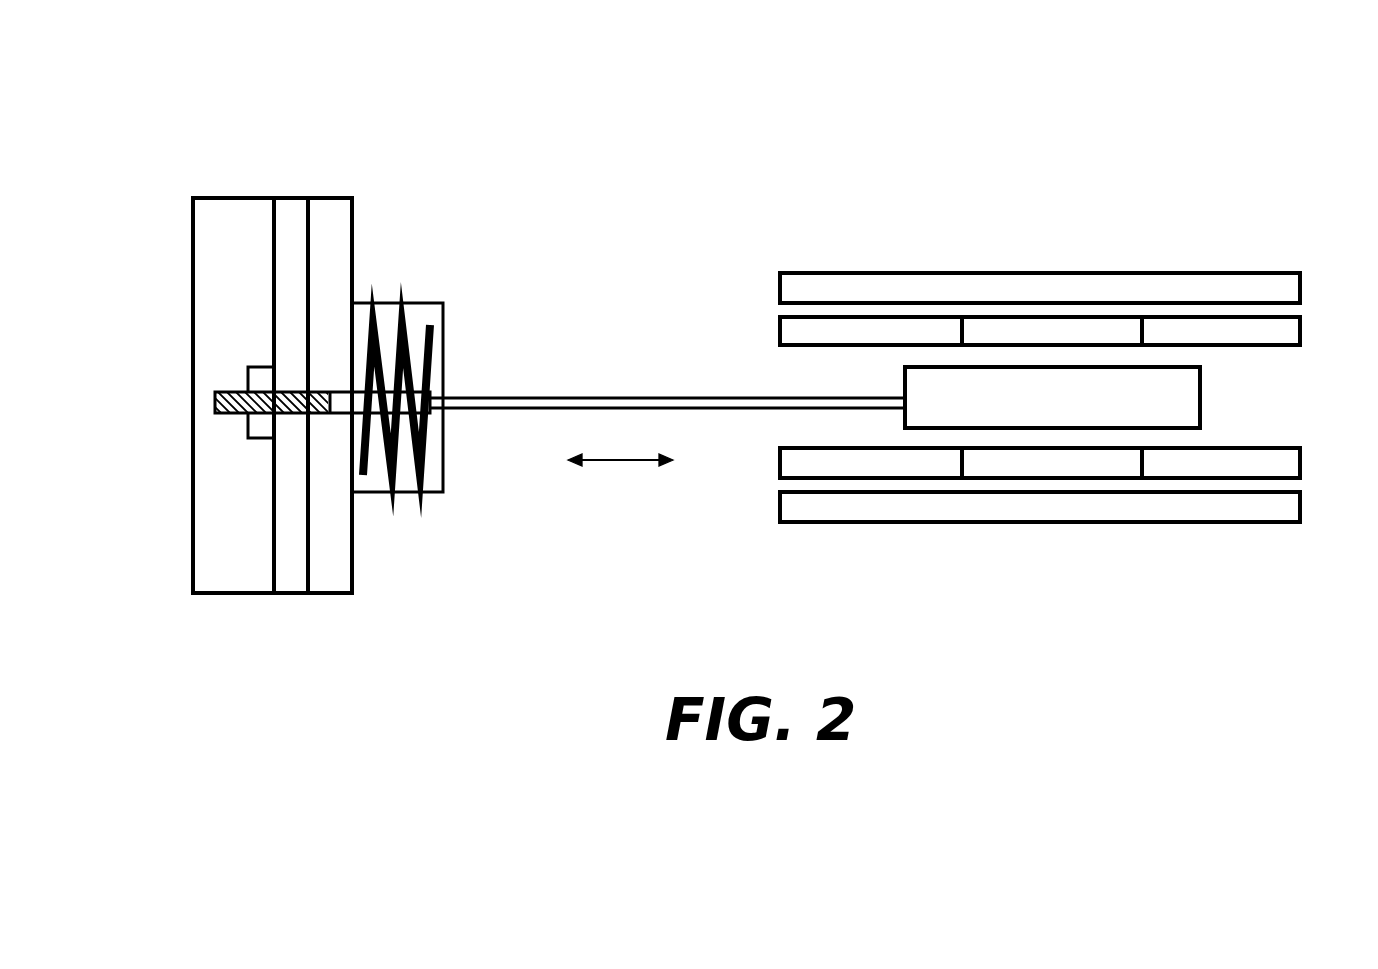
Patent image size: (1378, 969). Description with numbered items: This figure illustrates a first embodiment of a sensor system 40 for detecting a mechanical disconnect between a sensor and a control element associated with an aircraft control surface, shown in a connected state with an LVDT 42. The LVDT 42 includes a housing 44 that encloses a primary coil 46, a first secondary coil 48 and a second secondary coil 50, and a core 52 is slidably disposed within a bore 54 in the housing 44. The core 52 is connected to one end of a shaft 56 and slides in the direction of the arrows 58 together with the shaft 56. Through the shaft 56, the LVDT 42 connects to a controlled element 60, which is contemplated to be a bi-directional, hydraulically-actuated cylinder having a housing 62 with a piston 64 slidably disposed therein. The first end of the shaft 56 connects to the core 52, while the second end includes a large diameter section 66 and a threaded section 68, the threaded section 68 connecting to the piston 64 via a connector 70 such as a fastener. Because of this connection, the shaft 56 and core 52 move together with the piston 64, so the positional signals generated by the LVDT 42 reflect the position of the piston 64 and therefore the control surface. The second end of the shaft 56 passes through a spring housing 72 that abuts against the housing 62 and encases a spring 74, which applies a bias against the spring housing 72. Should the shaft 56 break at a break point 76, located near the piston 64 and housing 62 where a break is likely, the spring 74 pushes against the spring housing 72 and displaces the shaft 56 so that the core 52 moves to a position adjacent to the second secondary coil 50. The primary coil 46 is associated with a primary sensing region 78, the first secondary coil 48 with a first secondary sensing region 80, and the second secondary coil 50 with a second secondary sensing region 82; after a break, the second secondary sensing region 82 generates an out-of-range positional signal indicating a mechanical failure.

The sensor system 40 is at (472, 85).
The LVDT 42 is at (800, 290).
The housing 44 is at (797, 510).
The primary coil 46 is at (1068, 330).
The first secondary coil 48 is at (805, 330).
The second secondary coil 50 is at (1280, 330).
The core 52 is at (1168, 388).
The bore 54 is at (805, 372).
The shaft 56 is at (567, 398).
The arrows 58 is at (632, 462).
The controlled element 60 is at (228, 198).
The housing 62 is at (352, 198).
The piston 64 is at (290, 580).
The large diameter section 66 is at (357, 400).
The threaded section 68 is at (232, 392).
The connector 70 is at (255, 432).
The spring housing 72 is at (393, 303).
The spring 74 is at (420, 460).
The break point 76 is at (323, 413).
The primary sensing region 78 is at (1142, 267).
The first secondary sensing region 80 is at (962, 267).
The second secondary sensing region 82 is at (1300, 267).